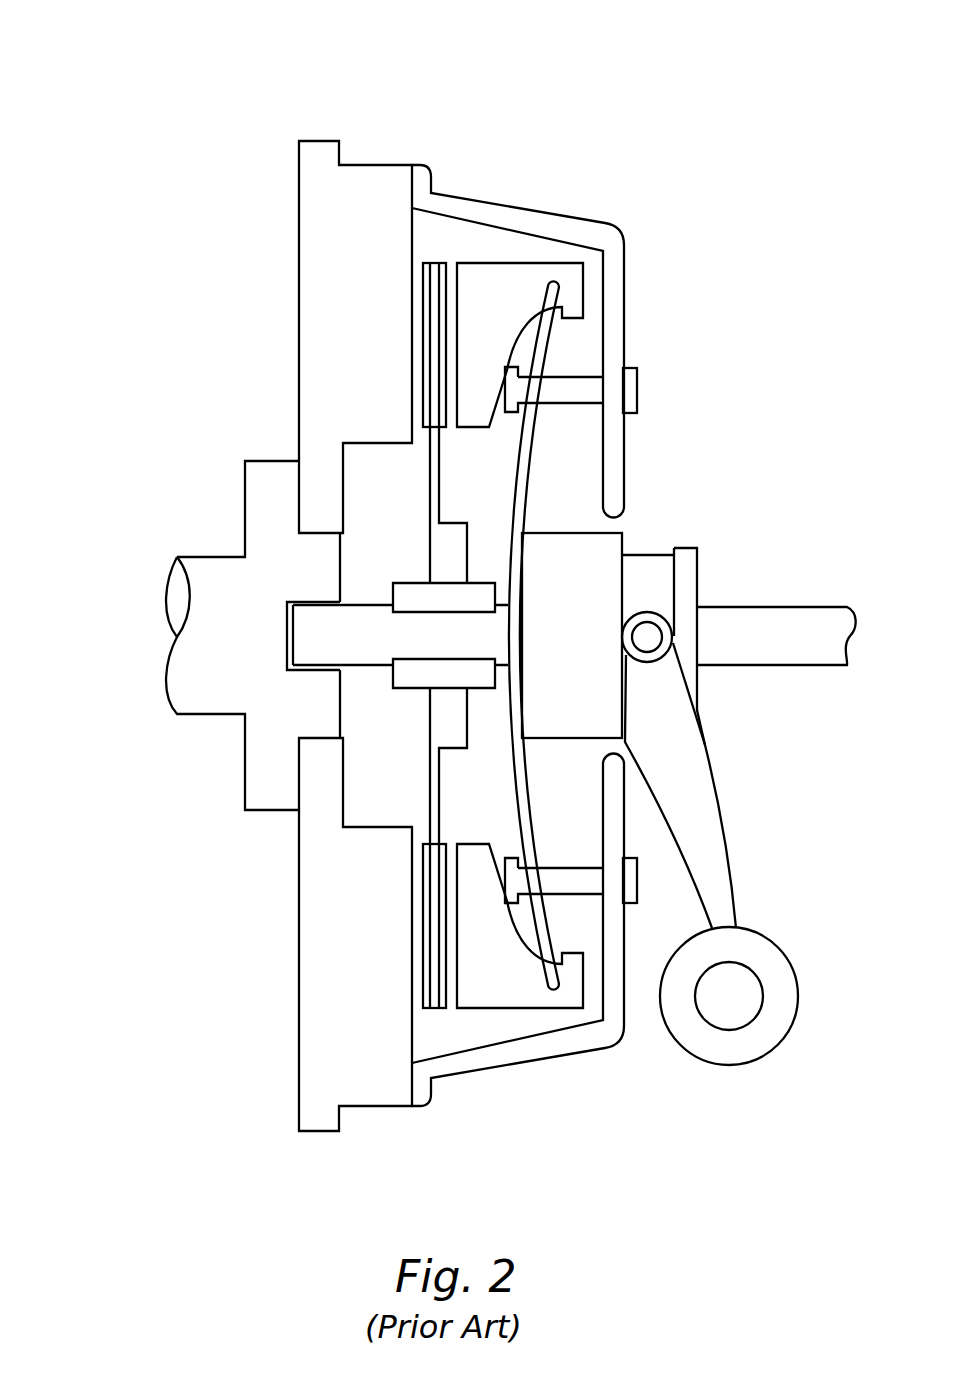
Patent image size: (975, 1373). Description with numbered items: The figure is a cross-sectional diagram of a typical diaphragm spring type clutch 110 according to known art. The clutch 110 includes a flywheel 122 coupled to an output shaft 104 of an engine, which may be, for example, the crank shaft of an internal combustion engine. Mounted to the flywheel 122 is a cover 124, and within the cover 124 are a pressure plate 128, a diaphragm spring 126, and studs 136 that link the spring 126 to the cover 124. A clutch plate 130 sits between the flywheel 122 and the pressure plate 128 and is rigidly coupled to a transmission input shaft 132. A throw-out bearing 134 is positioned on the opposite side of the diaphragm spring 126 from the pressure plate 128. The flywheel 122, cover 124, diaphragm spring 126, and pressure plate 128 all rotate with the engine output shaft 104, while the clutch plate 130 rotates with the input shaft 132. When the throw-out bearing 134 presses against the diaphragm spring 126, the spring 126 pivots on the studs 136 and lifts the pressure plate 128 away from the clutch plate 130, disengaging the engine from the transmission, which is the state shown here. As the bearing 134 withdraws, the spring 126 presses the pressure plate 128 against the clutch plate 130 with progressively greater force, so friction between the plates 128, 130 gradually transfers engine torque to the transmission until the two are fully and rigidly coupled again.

The clutch 110 is at (138, 72).
The output shaft 104 is at (210, 572).
The flywheel 122 is at (370, 187).
The cover 124 is at (613, 273).
The diaphragm spring 126 is at (523, 455).
The pressure plate 128 is at (500, 278).
The clutch plate 130 is at (436, 268).
The transmission input shaft 132 is at (812, 620).
The throw-out bearing 134 is at (604, 556).
The studs 136 is at (578, 383).